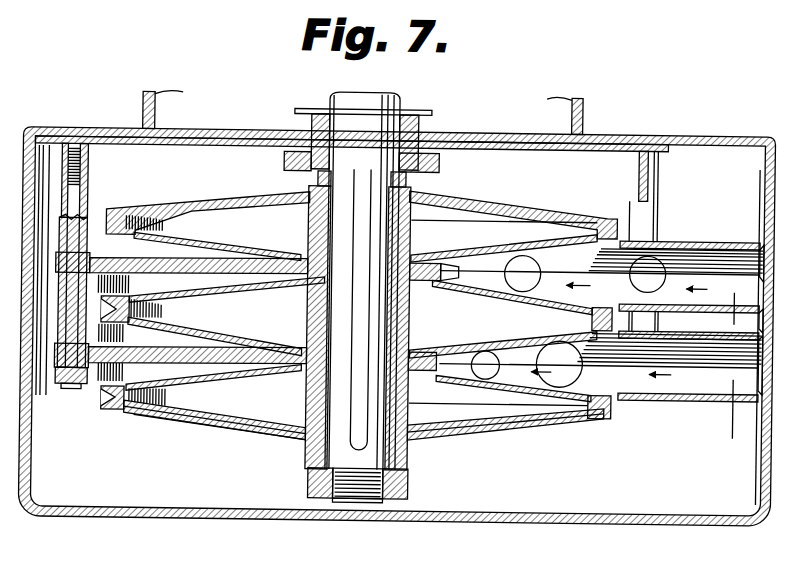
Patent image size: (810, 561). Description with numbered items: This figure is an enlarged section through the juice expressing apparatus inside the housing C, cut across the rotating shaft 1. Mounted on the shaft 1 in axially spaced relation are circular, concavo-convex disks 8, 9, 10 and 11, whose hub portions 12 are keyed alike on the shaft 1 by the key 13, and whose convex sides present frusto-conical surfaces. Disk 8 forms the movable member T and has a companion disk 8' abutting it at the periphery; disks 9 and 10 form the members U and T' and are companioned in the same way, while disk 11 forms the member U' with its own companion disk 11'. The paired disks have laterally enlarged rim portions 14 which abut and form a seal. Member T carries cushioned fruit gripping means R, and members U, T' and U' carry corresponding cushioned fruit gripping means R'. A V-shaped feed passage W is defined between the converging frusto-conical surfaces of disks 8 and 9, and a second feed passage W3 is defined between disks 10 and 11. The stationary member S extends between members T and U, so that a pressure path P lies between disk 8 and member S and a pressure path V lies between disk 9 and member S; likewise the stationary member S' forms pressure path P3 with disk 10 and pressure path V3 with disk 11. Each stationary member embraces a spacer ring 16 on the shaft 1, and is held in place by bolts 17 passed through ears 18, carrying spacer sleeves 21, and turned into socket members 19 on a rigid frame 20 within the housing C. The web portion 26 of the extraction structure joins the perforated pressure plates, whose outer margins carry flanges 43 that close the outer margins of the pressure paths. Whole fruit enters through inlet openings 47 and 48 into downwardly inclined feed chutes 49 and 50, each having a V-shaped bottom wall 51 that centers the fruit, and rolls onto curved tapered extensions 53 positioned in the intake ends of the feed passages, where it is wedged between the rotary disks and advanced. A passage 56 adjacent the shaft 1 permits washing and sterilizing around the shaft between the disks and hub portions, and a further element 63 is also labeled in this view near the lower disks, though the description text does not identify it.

The shaft 1 is at (364, 108).
The key 13 is at (357, 183).
The rigid frame 20 is at (224, 147).
The filter boss F' is at (592, 110).
The socket members 19 is at (80, 161).
The ears 18 is at (56, 264).
The spacer sleeves 21 is at (56, 311).
The bolts 17 is at (80, 392).
The hub portions 12 is at (412, 245).
The stationary member S' is at (208, 211).
The pressure path P3 is at (155, 262).
The movable member U' is at (218, 215).
The passage 56 is at (309, 264).
The spacer ring 16 is at (302, 340).
The web portion 26 is at (232, 275).
The movable member T' is at (174, 249).
The pressure path V3 is at (233, 254).
The flanges 43 is at (110, 416).
The pressure path P is at (128, 419).
The stationary member S is at (213, 409).
The pressure path V is at (168, 418).
The movable member U is at (214, 436).
The movable member T is at (219, 442).
The companion disk 11' is at (513, 202).
The disk 11 is at (504, 221).
The cushioned fruit gripping means R' is at (602, 235).
The feed passage W3 is at (600, 218).
The tapered extension 53 is at (478, 266).
The disk 10 is at (482, 293).
The disk 9 is at (483, 343).
The rim portions 14 is at (614, 409).
The cone 63 is at (470, 386).
The feed passage W is at (598, 420).
The companion disk 8' is at (505, 441).
The disk 8 is at (505, 432).
The cushioned fruit gripping means R is at (600, 401).
The feed chute 49 is at (686, 262).
The V-shaped bottom wall 51 is at (688, 347).
The feed chute 50 is at (660, 386).
The inlet opening 47 is at (775, 272).
The inlet opening 48 is at (766, 424).
The housing C is at (147, 522).